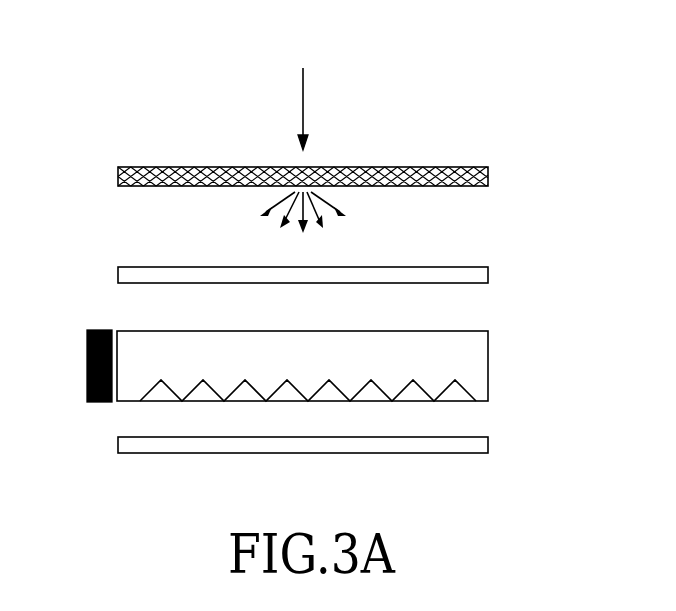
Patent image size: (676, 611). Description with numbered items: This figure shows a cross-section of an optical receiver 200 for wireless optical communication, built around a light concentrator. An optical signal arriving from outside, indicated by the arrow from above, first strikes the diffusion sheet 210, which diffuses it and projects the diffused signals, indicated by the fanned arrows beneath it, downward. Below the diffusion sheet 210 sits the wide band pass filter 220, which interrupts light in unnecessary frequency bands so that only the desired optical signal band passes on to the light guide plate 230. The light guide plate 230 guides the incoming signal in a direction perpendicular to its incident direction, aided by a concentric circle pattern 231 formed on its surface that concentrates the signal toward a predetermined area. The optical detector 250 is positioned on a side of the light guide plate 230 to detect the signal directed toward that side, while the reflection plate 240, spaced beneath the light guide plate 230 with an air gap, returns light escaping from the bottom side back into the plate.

The optical receiver 200 is at (108, 58).
The diffusion sheet 210 is at (490, 177).
The wide band pass filter 220 is at (490, 276).
The light guide plate 230 is at (502, 363).
The concentric circle pattern 231 is at (457, 394).
The reflection plate 240 is at (490, 445).
The optical detector 250 is at (86, 367).